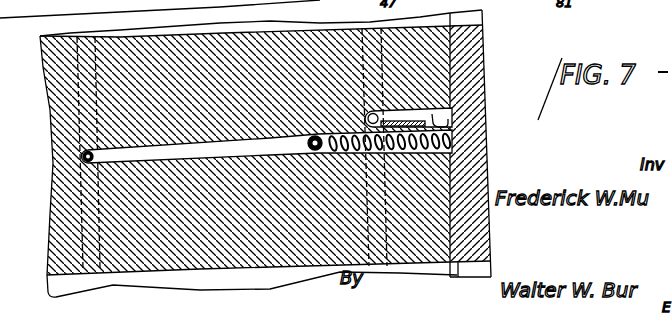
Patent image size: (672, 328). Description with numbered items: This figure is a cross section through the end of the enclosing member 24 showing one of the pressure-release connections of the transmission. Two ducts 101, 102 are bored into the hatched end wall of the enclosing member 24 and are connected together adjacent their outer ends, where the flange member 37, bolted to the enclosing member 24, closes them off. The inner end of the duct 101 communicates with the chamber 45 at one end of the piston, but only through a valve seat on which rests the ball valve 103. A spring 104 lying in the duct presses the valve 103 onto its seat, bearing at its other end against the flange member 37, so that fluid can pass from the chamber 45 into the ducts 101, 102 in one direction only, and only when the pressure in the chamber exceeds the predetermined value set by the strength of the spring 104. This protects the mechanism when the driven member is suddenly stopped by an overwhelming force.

The enclosing member 24 is at (130, 254).
The flange member 37 is at (484, 40).
The chamber 45 is at (78, 104).
The duct 101 is at (193, 155).
The duct 102 is at (456, 118).
The valve 103 is at (312, 151).
The spring 104 is at (352, 160).